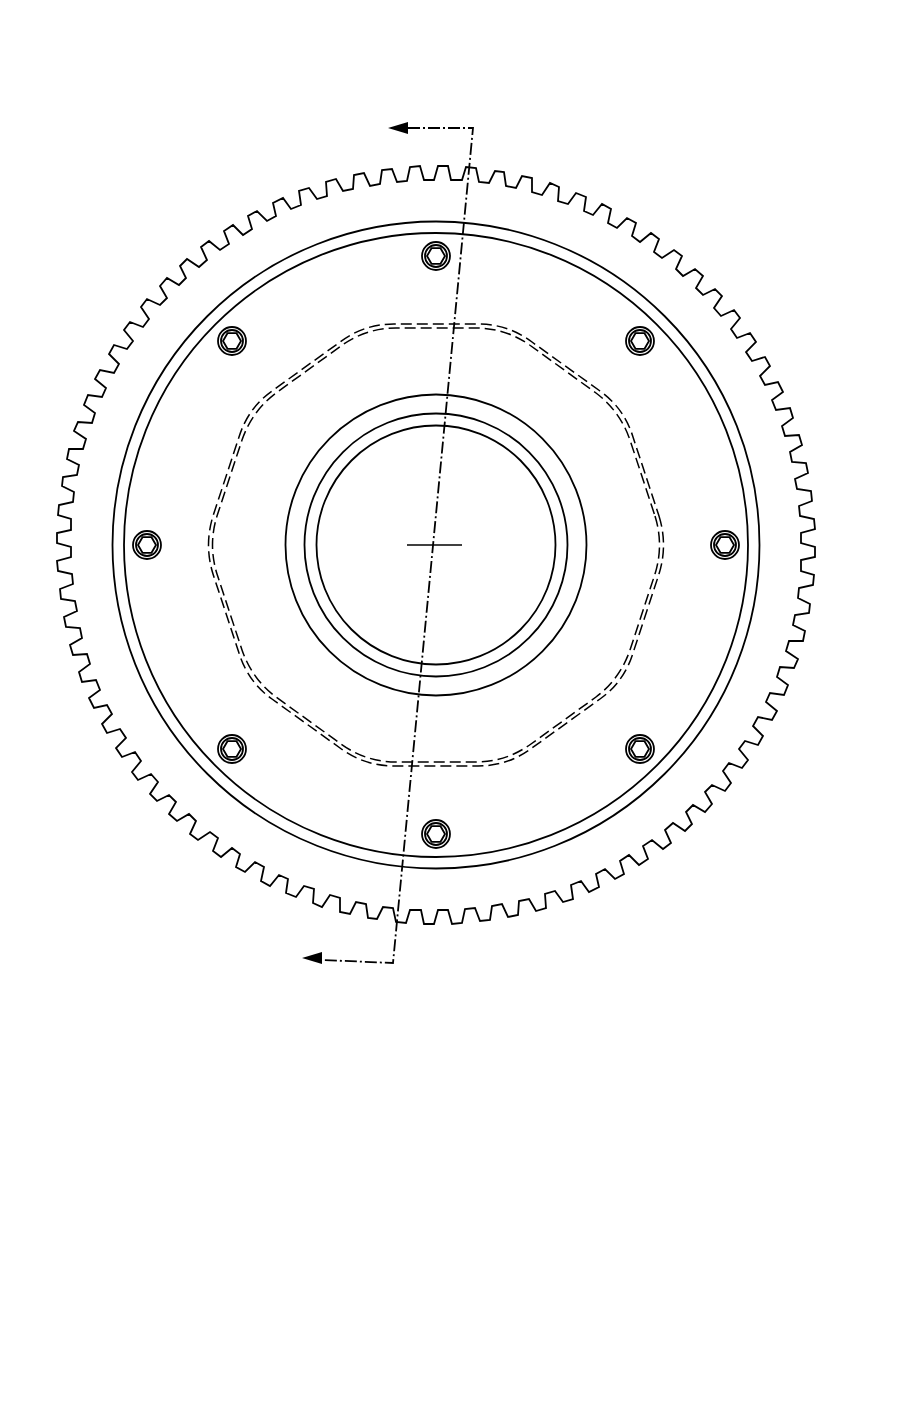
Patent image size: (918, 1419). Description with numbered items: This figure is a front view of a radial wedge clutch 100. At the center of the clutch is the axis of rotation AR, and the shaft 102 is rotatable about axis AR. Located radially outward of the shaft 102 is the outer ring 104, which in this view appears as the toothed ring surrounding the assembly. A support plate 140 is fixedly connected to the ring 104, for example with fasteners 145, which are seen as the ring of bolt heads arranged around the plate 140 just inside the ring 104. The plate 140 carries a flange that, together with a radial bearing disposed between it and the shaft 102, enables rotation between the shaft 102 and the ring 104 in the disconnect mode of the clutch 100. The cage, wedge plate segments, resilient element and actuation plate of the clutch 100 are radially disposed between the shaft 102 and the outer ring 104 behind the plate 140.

The radial wedge clutch 100 is at (727, 135).
The shaft 102 is at (398, 504).
The outer ring 104 is at (707, 280).
The support plate 140 is at (303, 257).
The fasteners 145 is at (230, 341).
The axis of rotation AR is at (435, 546).